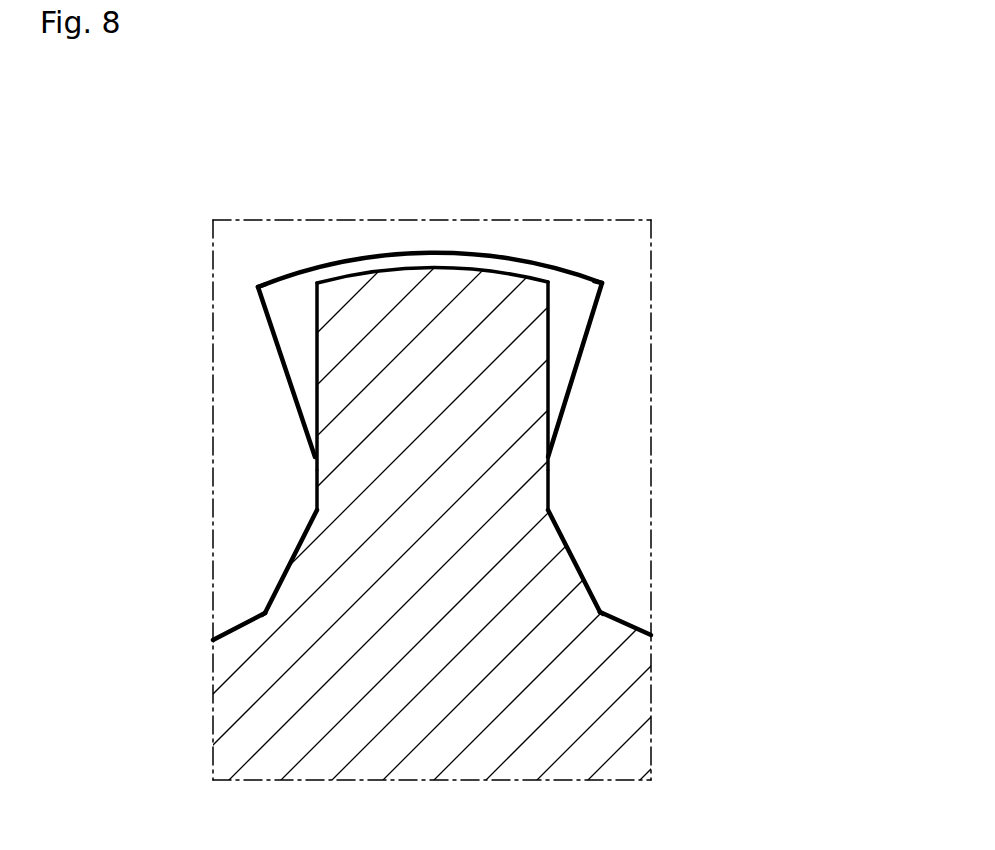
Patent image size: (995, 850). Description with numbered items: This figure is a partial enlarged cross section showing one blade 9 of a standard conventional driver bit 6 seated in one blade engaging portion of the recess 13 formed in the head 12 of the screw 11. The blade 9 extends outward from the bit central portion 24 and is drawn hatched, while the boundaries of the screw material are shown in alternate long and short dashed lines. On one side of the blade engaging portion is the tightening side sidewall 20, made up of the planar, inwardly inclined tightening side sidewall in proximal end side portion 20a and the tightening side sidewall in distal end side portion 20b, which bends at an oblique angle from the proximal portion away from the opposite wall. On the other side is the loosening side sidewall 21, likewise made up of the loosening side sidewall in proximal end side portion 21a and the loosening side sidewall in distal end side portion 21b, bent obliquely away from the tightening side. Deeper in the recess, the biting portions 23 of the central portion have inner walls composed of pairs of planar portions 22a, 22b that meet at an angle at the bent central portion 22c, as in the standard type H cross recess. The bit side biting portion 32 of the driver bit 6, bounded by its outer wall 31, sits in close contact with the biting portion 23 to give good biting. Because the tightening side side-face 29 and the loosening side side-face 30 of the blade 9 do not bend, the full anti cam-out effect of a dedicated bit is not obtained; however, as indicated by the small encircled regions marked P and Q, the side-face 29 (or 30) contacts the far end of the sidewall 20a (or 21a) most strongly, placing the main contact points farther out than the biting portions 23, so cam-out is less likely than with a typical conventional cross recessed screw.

The standard conventional driver bit 6 is at (633, 752).
The blade 9 is at (430, 357).
The screw 11 is at (230, 298).
The head 12 is at (623, 308).
The recess 13 is at (472, 265).
The tightening side sidewall 20 is at (573, 368).
The tightening side sidewall in proximal end side portion 20a is at (548, 471).
The tightening side sidewall in distal end side portion 20b is at (578, 350).
The loosening side sidewall 21 is at (285, 355).
The loosening side sidewall in proximal end side portion 21a is at (307, 472).
The loosening side sidewall in distal end side portion 21b is at (278, 352).
The planar portion of inner wall 22a is at (618, 620).
The planar portion of inner wall 22b is at (553, 597).
The central portion of inner wall 22c is at (601, 617).
The biting portion 23 is at (265, 615).
The bit central portion 24 is at (433, 747).
The tightening side side-face of a standard driver bit 29 is at (548, 395).
The loosening side side-face of a standard driver bit 30 is at (316, 397).
The outer wall of bit side biting portion of a standard driver bit 31 is at (281, 575).
The bit side biting portion of a standard driver bit 32 is at (264, 613).
The point P is at (548, 471).
The point Q is at (313, 470).